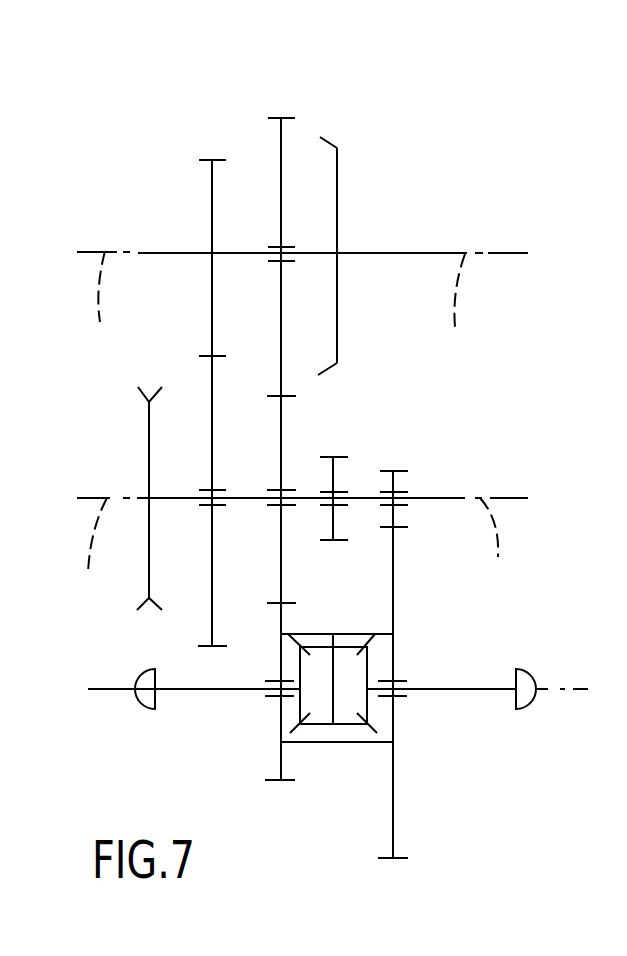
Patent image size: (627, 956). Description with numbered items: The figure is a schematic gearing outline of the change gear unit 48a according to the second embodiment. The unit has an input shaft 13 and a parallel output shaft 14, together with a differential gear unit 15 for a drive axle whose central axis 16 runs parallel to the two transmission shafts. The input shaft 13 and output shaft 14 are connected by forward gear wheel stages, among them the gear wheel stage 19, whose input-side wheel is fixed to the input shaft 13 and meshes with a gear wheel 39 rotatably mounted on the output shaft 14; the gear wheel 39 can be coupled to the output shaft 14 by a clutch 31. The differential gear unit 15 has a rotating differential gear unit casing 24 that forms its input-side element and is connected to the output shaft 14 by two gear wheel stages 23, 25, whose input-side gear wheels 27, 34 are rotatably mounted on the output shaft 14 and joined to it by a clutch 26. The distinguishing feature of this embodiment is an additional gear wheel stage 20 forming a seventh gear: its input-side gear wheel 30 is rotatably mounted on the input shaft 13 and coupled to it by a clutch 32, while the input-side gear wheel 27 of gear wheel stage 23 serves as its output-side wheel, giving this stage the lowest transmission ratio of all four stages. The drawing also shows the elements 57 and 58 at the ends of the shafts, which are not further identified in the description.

The input shaft 13 is at (399, 248).
The output shaft 14 is at (428, 493).
The differential gear unit 15 is at (363, 627).
The central axis 16 is at (103, 689).
The gear wheel stage 19 is at (212, 145).
The additional gear wheel stage 20 is at (281, 102).
The gear wheel stage 23 is at (280, 788).
The differential gear unit casing 24 is at (303, 632).
The gear wheel stage 25 is at (403, 864).
The clutch 26 is at (338, 445).
The input-side gear wheel 27 is at (282, 443).
The input-side gear wheel 30 is at (281, 202).
The clutch 31 is at (155, 382).
The clutch 32 is at (334, 132).
The input-side gear wheel 34 is at (405, 459).
The gear wheel 39 is at (212, 600).
The change gear unit 48a is at (473, 205).
The bearing 57 is at (275, 310).
The bearing 58 is at (289, 556).